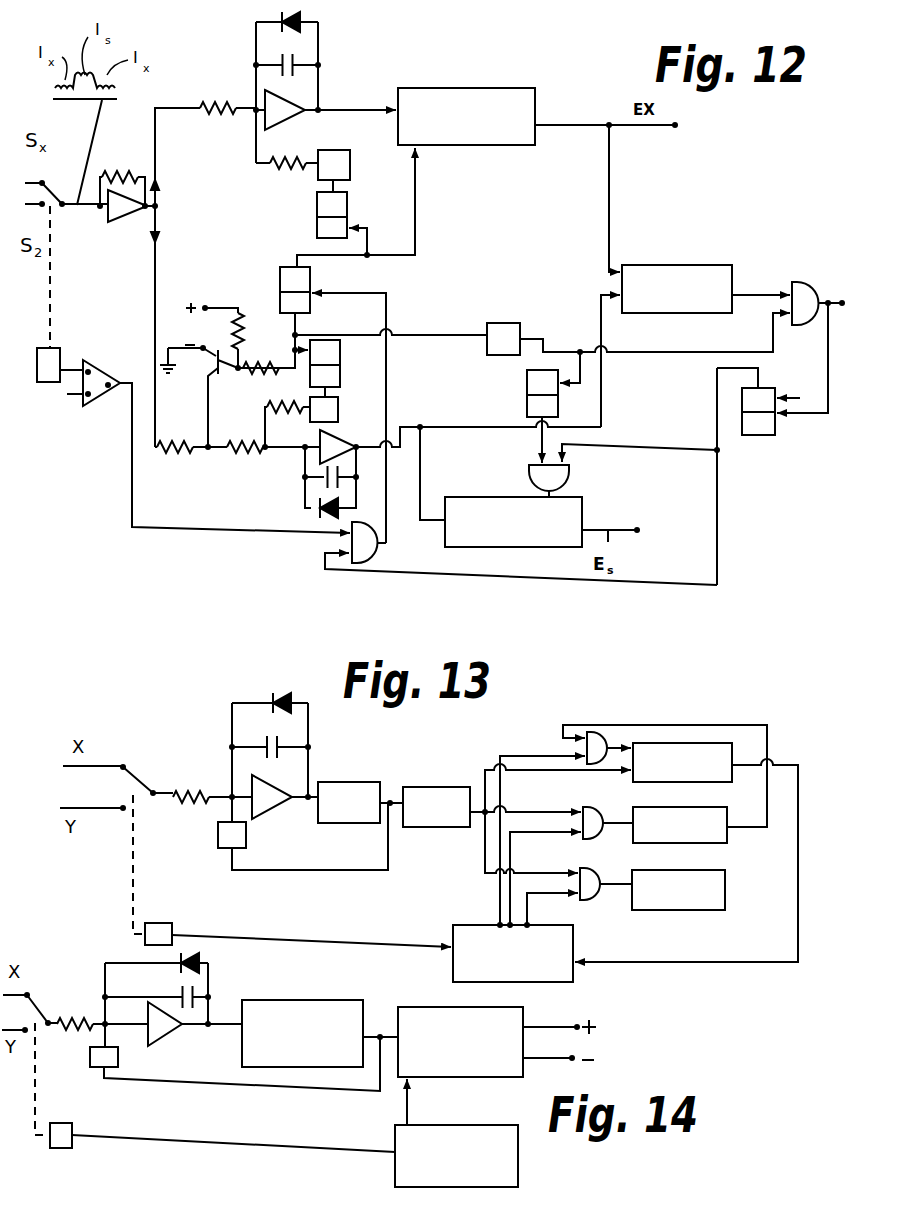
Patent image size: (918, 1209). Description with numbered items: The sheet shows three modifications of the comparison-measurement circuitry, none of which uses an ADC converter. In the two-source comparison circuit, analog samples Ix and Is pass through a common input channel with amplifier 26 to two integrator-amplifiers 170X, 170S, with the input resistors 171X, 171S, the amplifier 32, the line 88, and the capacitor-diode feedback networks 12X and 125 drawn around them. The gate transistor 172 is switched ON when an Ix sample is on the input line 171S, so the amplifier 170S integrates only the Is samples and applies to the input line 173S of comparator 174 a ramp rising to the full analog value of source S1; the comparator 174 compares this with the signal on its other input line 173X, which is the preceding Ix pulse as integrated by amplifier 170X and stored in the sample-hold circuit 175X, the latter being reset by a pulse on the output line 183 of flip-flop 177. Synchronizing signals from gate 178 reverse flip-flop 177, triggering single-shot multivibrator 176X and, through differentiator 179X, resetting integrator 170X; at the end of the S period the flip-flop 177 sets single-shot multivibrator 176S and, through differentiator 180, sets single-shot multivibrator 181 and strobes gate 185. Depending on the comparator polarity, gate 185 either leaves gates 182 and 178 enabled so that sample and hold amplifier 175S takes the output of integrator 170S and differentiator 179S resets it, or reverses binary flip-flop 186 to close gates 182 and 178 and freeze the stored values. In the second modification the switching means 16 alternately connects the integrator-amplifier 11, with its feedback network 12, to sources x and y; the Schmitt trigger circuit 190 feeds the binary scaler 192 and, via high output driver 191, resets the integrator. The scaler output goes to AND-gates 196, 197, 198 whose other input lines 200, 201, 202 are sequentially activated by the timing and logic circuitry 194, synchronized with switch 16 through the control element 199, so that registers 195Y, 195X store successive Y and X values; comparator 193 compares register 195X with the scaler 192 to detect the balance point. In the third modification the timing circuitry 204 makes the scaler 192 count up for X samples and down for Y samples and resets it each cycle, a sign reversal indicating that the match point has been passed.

In FIG. 12, the switching means 16 is at (53, 193).
In FIG. 13, the switching means 16 is at (137, 783).
In FIG. 14, the switching means 16 is at (37, 997).
In FIG. 12, the amplifier 26 is at (118, 222).
In FIG. 12, the comparator amplifier 32 is at (100, 369).
In FIG. 12, the control line 88 is at (173, 528).
In FIG. 12, the integrating capacitor and diode 12X is at (296, 64).
In FIG. 12, the integrating capacitor and diode 125 is at (293, 497).
In FIG. 12, the integrator-amplifier 170X is at (285, 109).
In FIG. 12, the integrator-amplifier 170S is at (325, 452).
In FIG. 12, the input resistor 171X is at (162, 143).
In FIG. 12, the input line 171S is at (170, 452).
In FIG. 12, the gate transistor 172 is at (218, 377).
In FIG. 12, the input line 173X is at (611, 192).
In FIG. 12, the input line 173S is at (601, 380).
In FIG. 12, the comparator 174 is at (676, 264).
In FIG. 12, the sample-hold circuit 175X is at (483, 145).
In FIG. 12, the sample and hold amplifier 175S is at (567, 498).
In FIG. 12, the single-shot multivibrator 176X is at (347, 205).
In FIG. 12, the single-shot multivibrator 176S is at (340, 350).
In FIG. 12, the flip-flop 177 is at (280, 284).
In FIG. 12, the gate 178 is at (380, 547).
In FIG. 12, the differentiator 179X is at (350, 165).
In FIG. 12, the differentiator 179S is at (338, 414).
In FIG. 12, the differentiator 180 is at (503, 322).
In FIG. 12, the single-shot multivibrator 181 is at (527, 383).
In FIG. 12, the gate 182 is at (527, 477).
In FIG. 12, the output line 183 is at (418, 229).
In FIG. 12, the gate 185 is at (807, 281).
In FIG. 12, the binary flip-flop 186 is at (758, 420).
In FIG. 13, the integrator-amplifier 11 is at (280, 805).
In FIG. 14, the integrator-amplifier 11 is at (160, 1036).
In FIG. 13, the integrating capacitor and diode 12 is at (277, 748).
In FIG. 14, the integrating capacitor and diode 12 is at (200, 990).
In FIG. 13, the Schmitt trigger circuit 190 is at (338, 782).
In FIG. 14, the Schmitt trigger circuit 190 is at (303, 1002).
In FIG. 13, the high output driver 191 is at (216, 837).
In FIG. 14, the high output driver 191 is at (90, 1060).
In FIG. 13, the binary scaler 192 is at (435, 787).
In FIG. 14, the binary scaler 192 is at (473, 1008).
In FIG. 13, the comparator 193 is at (698, 745).
In FIG. 13, the timing and logic circuitry 194 is at (567, 968).
In FIG. 13, the register 195X is at (713, 846).
In FIG. 13, the register 195Y is at (675, 909).
In FIG. 13, the AND-gate 196 is at (603, 735).
In FIG. 13, the AND-gate 197 is at (593, 798).
In FIG. 13, the AND-gate 198 is at (593, 878).
In FIG. 13, the switch control 199 is at (170, 933).
In FIG. 14, the switch control 199 is at (72, 1127).
In FIG. 13, the input line 200 is at (498, 895).
In FIG. 13, the input line 201 is at (510, 906).
In FIG. 13, the input line 202 is at (530, 911).
In FIG. 14, the timing circuitry 204 is at (517, 1157).